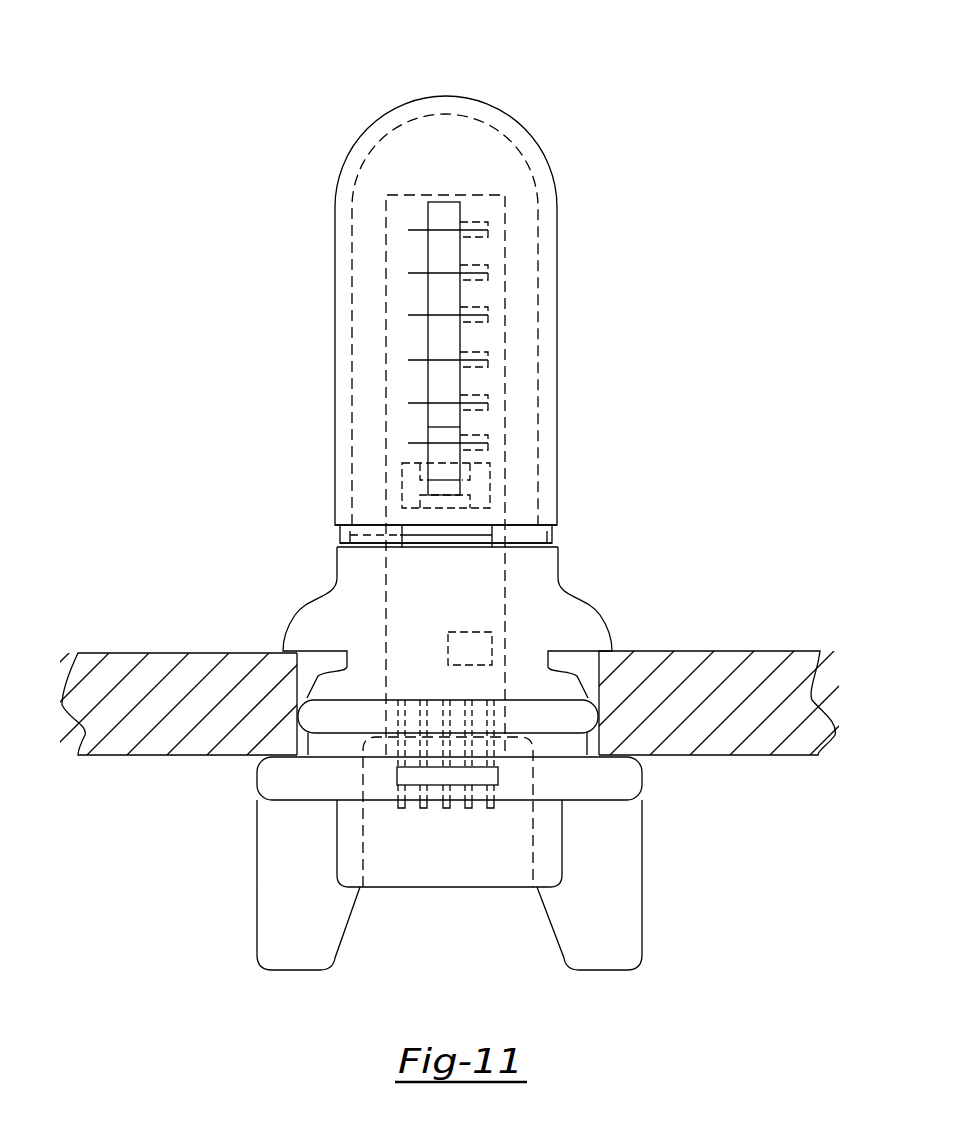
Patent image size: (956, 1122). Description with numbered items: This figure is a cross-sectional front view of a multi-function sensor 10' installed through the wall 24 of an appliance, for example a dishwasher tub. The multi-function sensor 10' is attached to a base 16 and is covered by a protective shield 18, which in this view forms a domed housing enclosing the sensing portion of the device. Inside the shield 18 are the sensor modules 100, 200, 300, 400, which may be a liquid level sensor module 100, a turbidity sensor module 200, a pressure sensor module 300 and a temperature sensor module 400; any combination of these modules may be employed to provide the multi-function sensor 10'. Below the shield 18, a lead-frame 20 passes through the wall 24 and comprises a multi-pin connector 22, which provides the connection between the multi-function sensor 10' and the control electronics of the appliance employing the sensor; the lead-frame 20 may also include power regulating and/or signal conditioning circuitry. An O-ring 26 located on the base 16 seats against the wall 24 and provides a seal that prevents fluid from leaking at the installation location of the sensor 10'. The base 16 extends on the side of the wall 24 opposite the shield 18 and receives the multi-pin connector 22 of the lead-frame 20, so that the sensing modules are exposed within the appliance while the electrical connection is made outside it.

The multi-function sensor 10' is at (406, 491).
The protective shield 18 is at (367, 131).
The liquid level sensor module 100 is at (328, 475).
The turbidity sensor module 200 is at (328, 475).
The pressure sensor module 300 is at (328, 475).
The temperature sensor module 400 is at (395, 352).
The lead-frame 20 is at (405, 582).
The wall 24 is at (128, 653).
The O-ring 26 is at (583, 715).
The multi-pin connector 22 is at (398, 764).
The base 16 is at (423, 886).